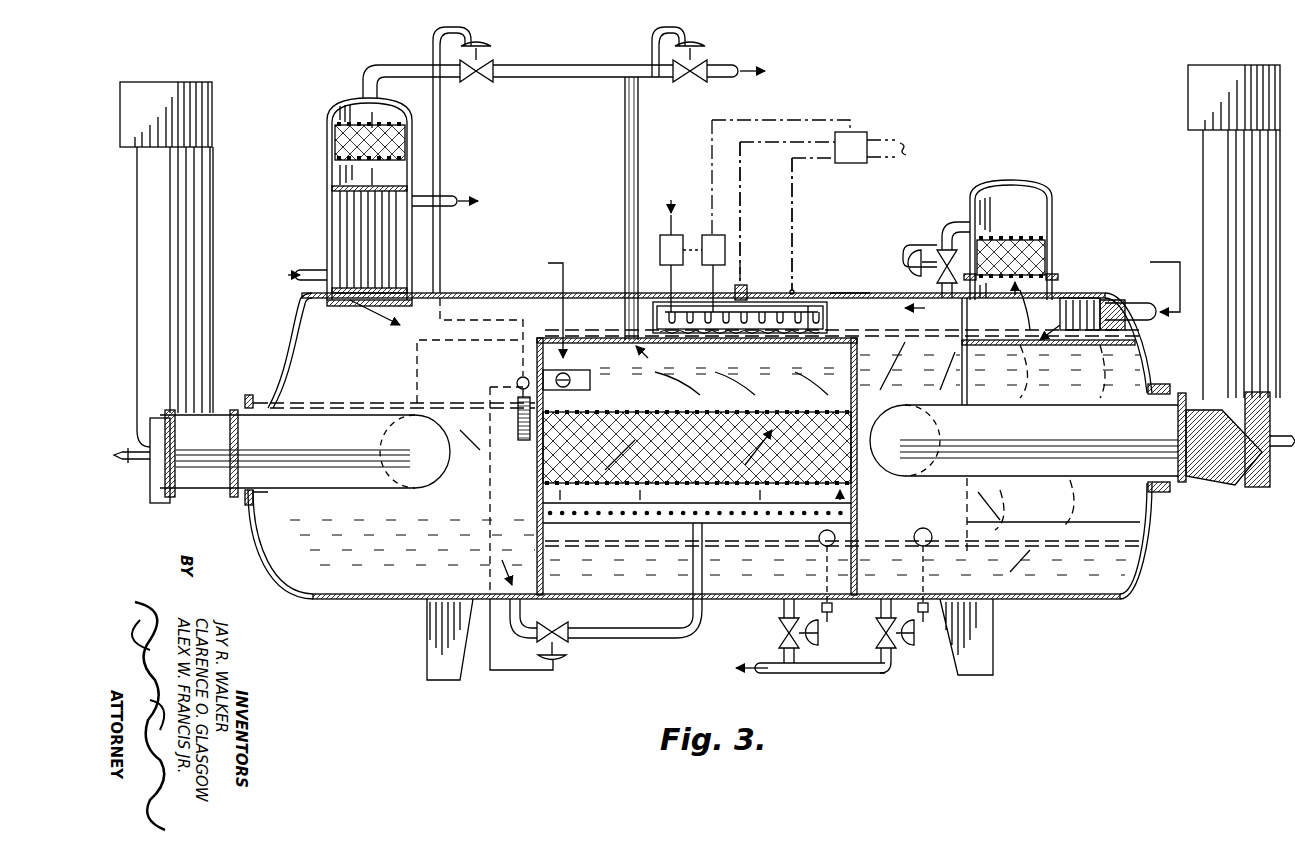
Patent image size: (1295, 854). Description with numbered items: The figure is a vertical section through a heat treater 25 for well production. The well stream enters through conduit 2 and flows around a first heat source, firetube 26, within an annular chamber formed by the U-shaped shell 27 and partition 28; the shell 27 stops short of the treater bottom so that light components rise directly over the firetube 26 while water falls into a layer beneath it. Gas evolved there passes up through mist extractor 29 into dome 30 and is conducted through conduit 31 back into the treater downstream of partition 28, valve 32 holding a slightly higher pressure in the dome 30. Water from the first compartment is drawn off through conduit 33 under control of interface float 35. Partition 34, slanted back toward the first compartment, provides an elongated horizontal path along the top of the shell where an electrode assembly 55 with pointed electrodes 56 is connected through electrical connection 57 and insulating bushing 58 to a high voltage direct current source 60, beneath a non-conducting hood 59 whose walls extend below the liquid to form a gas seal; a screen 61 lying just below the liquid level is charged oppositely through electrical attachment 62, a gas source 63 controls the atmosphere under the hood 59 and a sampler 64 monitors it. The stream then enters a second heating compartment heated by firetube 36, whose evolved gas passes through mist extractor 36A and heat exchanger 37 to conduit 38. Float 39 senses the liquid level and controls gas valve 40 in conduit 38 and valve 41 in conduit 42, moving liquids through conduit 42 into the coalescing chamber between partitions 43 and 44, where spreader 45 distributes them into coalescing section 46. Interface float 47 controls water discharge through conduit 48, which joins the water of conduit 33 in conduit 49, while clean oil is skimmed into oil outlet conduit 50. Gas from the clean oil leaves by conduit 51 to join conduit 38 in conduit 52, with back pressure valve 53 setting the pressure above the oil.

The conduit 2 is at (1132, 302).
The heat treater 25 is at (1050, 599).
The firetube 26 is at (1082, 439).
The shell 27 is at (1072, 345).
The partition 28 is at (946, 298).
The mist extractor 29 is at (1030, 243).
The dome 30 is at (1025, 182).
The gas conduit 31 is at (950, 218).
The valve 32 is at (940, 271).
The conduit 33 is at (880, 675).
The partition 34 is at (442, 343).
The interface float 35 is at (928, 528).
The firetube 36 is at (282, 450).
The mist extractor 36A is at (330, 150).
The heat exchanger 37 is at (345, 228).
The conduit 38 is at (535, 64).
The float 39 is at (521, 440).
The gas valve 40 is at (480, 62).
The valve 41 is at (560, 648).
The conduit 42 is at (595, 628).
The partition 43 is at (537, 542).
The partition 44 is at (857, 485).
The spreader 45 is at (598, 514).
The coalescing section 46 is at (697, 447).
The interface float 47 is at (818, 538).
The conduit 48 is at (785, 606).
The conduit 49 is at (768, 675).
The oil outlet conduit 50 is at (575, 372).
The conduit 51 is at (622, 192).
The conduit 52 is at (728, 64).
The back pressure valve 53 is at (695, 55).
The electrode assembly 55 is at (746, 298).
The pointed electrodes 56 is at (808, 318).
The electrical connection 57 is at (742, 260).
The insulating bushing 58 is at (743, 283).
The hood 59 is at (840, 298).
The source of high voltage direct current 60 is at (863, 131).
The screen 61 is at (745, 333).
The electrical attachment 62 is at (793, 285).
The source 63 is at (660, 250).
The sampler 64 is at (725, 250).